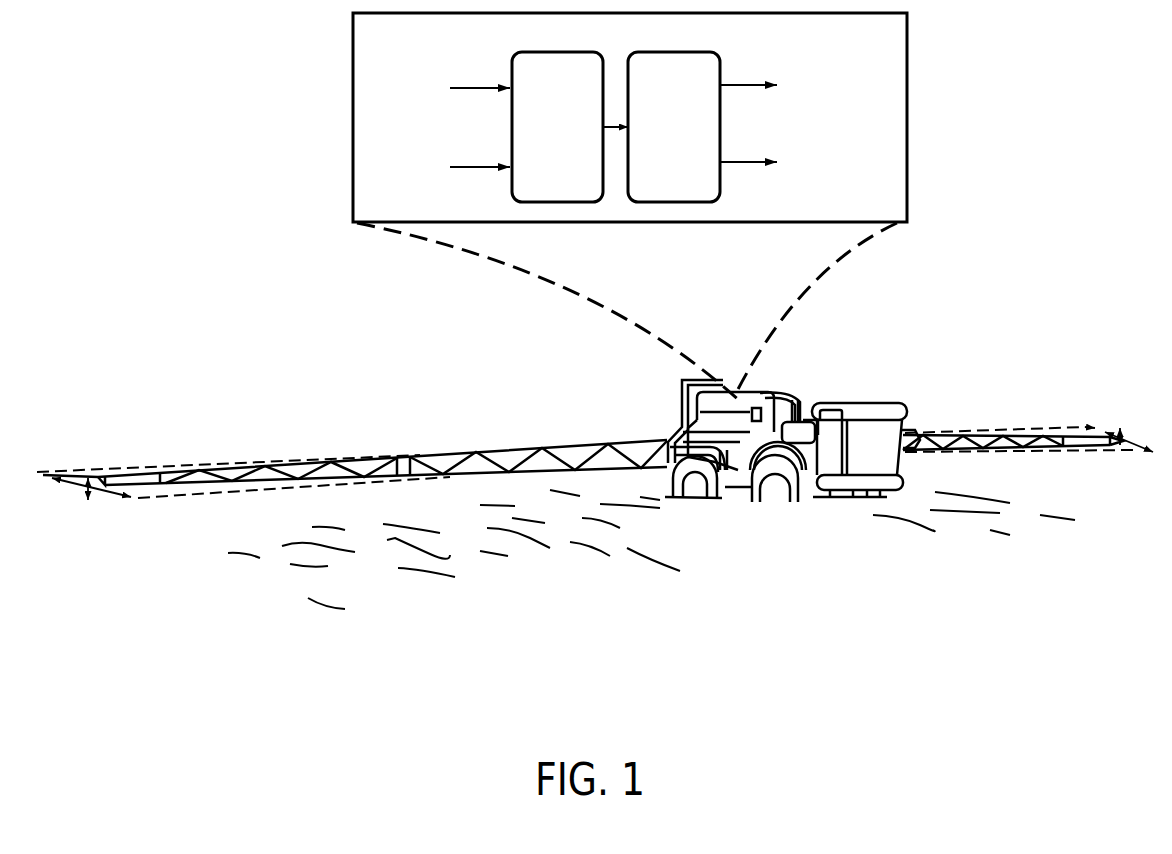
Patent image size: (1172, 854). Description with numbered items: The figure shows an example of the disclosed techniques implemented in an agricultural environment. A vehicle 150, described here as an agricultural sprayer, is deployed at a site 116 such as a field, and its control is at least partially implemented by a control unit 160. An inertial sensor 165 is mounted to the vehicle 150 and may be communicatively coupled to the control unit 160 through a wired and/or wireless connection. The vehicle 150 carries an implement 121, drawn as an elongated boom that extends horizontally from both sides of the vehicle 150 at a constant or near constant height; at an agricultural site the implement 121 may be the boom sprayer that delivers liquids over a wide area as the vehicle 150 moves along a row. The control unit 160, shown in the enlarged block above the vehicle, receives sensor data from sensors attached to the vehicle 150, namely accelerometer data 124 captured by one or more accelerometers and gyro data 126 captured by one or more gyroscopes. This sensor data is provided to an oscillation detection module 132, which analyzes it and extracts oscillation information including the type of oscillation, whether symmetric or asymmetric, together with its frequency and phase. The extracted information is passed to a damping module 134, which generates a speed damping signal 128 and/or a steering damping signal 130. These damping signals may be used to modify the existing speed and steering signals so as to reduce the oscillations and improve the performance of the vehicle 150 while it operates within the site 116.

The control unit 160 is at (685, 41).
The oscillation detection module 132 is at (570, 171).
The damping module 134 is at (687, 160).
The accelerometer data 124 is at (436, 87).
The gyro data 126 is at (442, 166).
The speed damping signal 128 is at (806, 83).
The steering damping signal 130 is at (810, 162).
The vehicle 150 is at (800, 397).
The inertial sensor 165 is at (757, 422).
The implement 121 is at (513, 443).
The site 116 is at (650, 565).